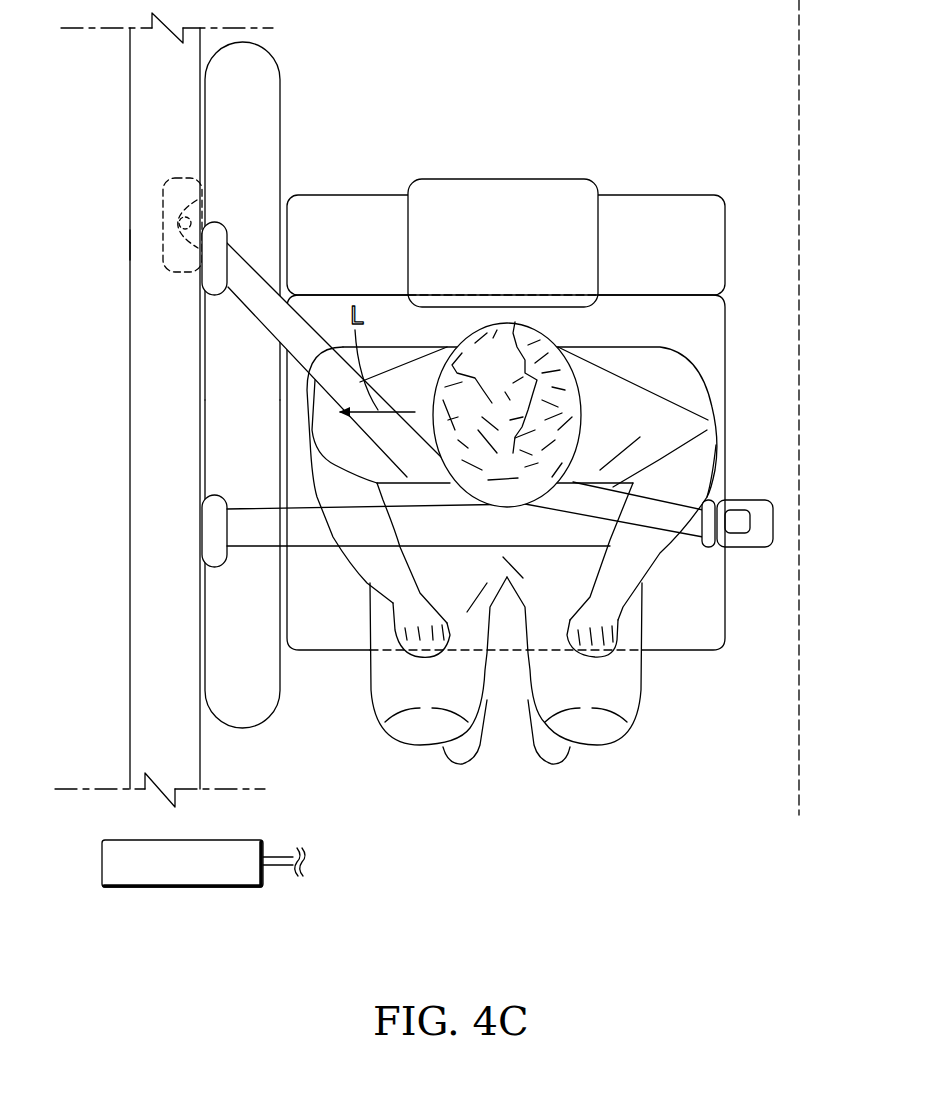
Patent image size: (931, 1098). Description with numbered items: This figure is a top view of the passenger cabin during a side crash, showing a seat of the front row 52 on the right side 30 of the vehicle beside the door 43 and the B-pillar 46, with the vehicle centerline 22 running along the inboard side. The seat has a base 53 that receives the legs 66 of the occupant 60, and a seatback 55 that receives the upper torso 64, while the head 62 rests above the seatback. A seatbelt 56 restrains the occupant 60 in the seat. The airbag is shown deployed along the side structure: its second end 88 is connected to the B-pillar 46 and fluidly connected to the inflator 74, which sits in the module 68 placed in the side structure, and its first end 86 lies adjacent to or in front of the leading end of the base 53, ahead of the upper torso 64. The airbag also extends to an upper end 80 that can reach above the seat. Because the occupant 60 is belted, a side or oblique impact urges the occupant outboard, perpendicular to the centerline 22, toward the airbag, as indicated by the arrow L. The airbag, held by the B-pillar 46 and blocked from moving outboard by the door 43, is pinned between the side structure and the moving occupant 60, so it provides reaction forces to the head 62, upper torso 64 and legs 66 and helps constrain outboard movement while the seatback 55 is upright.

The centerline 22 is at (803, 440).
The right side 30 is at (100, 590).
The door 43 is at (145, 405).
The B-pillar 46 is at (145, 249).
The front row 52 is at (536, 376).
The base 53 is at (718, 412).
The seatback 55 is at (722, 205).
The seatbelt 56 is at (690, 525).
The occupant 60 is at (506, 502).
The head 62 is at (517, 350).
The upper torso 64 is at (673, 447).
The legs 66 is at (627, 683).
The module 68 is at (136, 187).
The inflator 74 is at (178, 222).
The upper end 80 is at (103, 863).
The first end 86 is at (235, 700).
The second end 88 is at (247, 78).